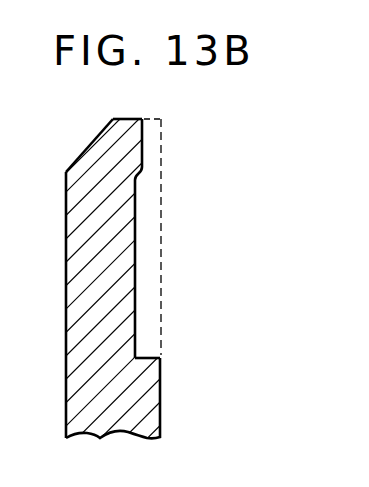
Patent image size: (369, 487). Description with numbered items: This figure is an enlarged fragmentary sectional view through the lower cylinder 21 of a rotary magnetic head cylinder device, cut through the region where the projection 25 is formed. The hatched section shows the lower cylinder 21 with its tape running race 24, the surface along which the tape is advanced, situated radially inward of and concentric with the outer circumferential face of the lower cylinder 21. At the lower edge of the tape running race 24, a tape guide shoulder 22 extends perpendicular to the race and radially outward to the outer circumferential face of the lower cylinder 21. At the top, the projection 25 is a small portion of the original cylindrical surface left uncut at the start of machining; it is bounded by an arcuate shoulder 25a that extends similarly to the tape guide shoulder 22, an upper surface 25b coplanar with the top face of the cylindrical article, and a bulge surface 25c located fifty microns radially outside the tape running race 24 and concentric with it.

The lower cylinder 21 is at (160, 417).
The tape guide shoulder 22 is at (148, 358).
The tape running race 24 is at (135, 258).
The projection 25 is at (143, 130).
The arcuate shoulder 25a is at (140, 173).
The upper surface 25b is at (130, 118).
The bulge surface 25c is at (143, 150).